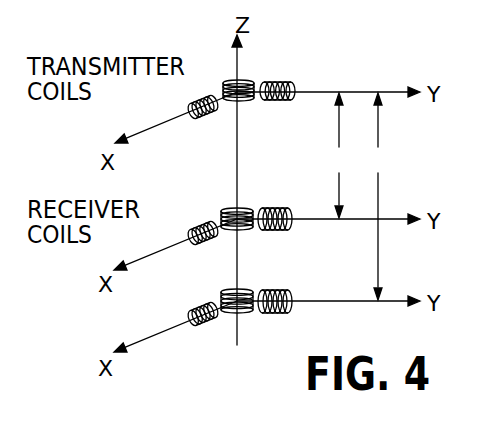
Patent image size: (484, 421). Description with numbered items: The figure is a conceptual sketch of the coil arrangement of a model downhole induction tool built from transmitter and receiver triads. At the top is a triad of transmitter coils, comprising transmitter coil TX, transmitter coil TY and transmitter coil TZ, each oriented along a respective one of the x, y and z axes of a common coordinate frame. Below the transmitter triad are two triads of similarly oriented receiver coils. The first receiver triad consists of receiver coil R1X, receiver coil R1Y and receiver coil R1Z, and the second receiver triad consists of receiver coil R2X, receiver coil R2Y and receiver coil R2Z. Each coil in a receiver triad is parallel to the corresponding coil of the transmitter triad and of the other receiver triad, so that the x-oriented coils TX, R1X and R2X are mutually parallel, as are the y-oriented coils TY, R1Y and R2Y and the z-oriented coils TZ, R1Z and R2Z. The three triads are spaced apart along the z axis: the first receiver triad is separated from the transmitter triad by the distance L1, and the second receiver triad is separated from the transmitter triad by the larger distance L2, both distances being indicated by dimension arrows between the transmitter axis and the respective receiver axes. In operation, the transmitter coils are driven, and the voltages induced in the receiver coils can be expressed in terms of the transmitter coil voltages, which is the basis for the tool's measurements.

The transmitter coil TZ is at (234, 79).
The transmitter coil TY is at (290, 82).
The transmitter coil TX is at (192, 106).
The receiver coil R1Z is at (225, 208).
The receiver coil R1Y is at (298, 231).
The receiver coil R1X is at (187, 233).
The receiver coil R2Z is at (226, 290).
The receiver coil R2Y is at (298, 313).
The receiver coil R2X is at (187, 315).
The separation distance L1 is at (342, 155).
The separation distance L2 is at (381, 196).